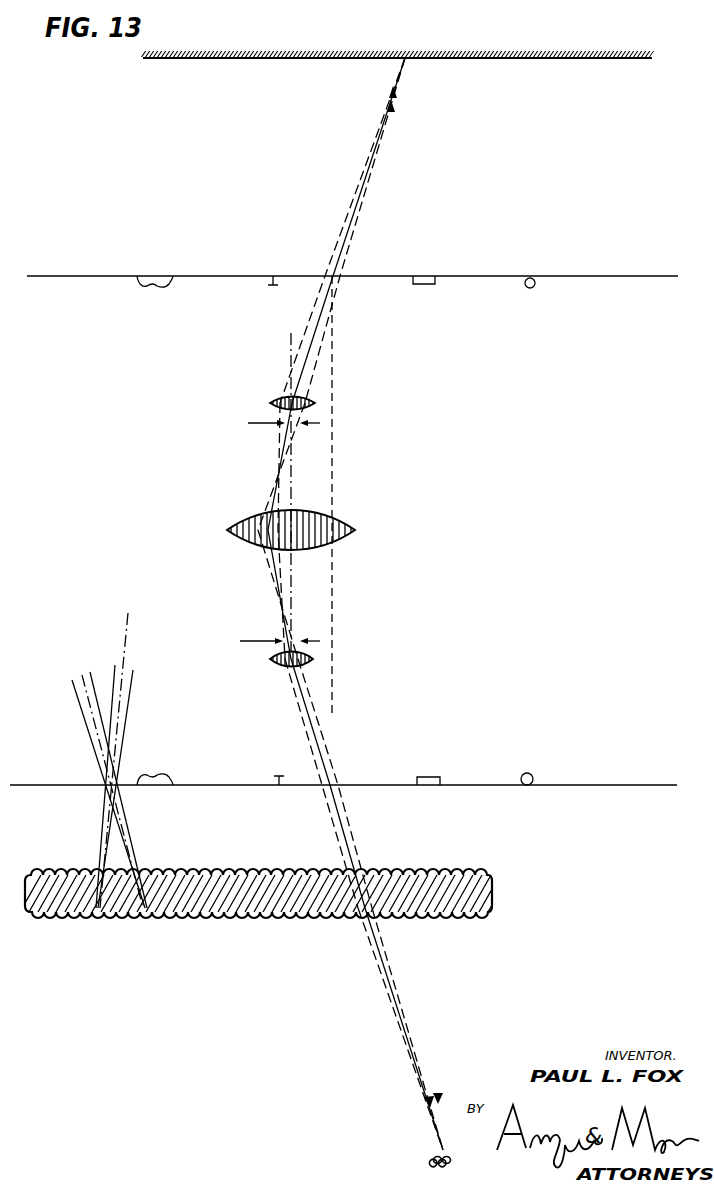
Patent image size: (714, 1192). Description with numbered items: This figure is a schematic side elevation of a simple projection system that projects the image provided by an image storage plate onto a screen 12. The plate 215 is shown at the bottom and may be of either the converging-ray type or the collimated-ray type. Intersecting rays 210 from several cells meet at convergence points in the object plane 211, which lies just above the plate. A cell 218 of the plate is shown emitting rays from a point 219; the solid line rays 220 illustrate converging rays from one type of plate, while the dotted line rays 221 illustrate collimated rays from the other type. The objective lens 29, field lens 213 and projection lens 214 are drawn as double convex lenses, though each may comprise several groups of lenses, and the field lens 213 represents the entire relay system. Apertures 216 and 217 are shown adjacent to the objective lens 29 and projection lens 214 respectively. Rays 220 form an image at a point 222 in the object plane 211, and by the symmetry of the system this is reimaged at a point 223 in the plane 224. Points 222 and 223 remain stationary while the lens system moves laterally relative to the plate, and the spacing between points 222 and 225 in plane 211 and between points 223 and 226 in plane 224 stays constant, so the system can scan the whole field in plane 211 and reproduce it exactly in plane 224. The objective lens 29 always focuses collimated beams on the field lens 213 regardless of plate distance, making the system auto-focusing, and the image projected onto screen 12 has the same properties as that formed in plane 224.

The screen 12 is at (463, 60).
The plane 224 is at (462, 277).
The object plane 211 is at (468, 785).
The plate 215 is at (80, 915).
The intersecting rays 210 is at (100, 797).
The projection lens 214 is at (274, 398).
The aperture 217 is at (305, 426).
The field lens 213 is at (350, 516).
The aperture 216 is at (300, 640).
The objective lens 29 is at (275, 664).
The point 223 is at (333, 276).
The point 226 is at (318, 276).
The point 222 is at (332, 785).
The point 225 is at (316, 786).
The dotted line rays 221 is at (350, 805).
The solid line rays 220 is at (355, 836).
The cell 218 is at (365, 877).
The point 219 is at (365, 912).